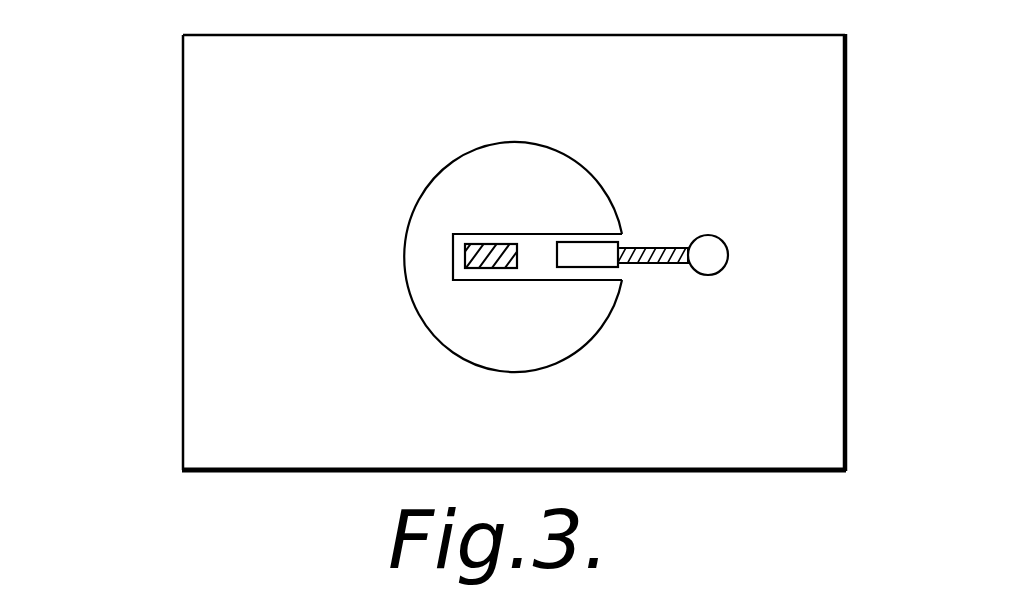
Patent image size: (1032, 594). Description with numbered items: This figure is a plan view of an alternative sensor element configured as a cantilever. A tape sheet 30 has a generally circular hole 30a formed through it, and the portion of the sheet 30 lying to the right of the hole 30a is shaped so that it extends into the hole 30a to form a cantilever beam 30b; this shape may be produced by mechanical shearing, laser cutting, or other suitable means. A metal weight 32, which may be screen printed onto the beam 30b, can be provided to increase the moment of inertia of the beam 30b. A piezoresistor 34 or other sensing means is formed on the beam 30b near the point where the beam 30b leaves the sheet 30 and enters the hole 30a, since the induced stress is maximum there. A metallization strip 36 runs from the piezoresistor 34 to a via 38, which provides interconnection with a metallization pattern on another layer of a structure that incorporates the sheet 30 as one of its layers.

The tape sheet 30 is at (183, 127).
The circular hole 30a is at (442, 170).
The cantilever beam 30b is at (483, 234).
The metal weight 32 is at (507, 266).
The piezoresistor 34 is at (585, 252).
The metallization strip 36 is at (667, 263).
The via 38 is at (720, 252).